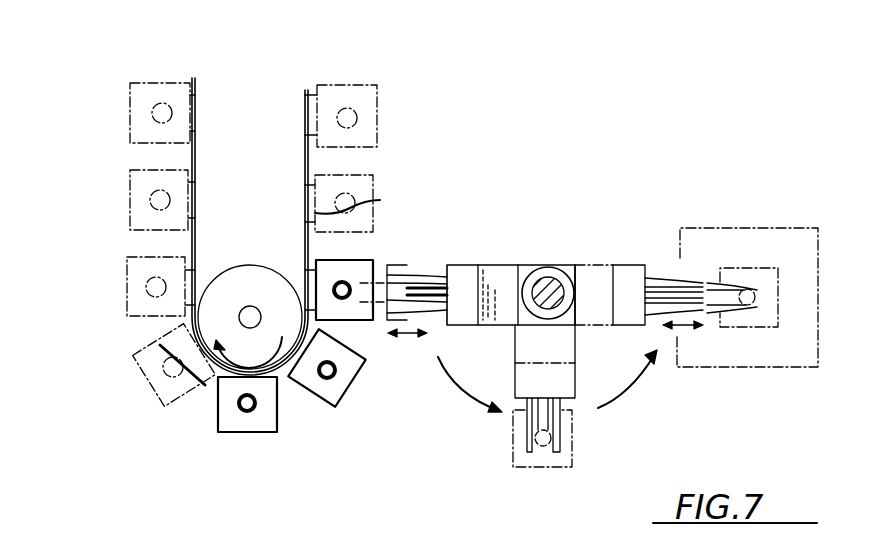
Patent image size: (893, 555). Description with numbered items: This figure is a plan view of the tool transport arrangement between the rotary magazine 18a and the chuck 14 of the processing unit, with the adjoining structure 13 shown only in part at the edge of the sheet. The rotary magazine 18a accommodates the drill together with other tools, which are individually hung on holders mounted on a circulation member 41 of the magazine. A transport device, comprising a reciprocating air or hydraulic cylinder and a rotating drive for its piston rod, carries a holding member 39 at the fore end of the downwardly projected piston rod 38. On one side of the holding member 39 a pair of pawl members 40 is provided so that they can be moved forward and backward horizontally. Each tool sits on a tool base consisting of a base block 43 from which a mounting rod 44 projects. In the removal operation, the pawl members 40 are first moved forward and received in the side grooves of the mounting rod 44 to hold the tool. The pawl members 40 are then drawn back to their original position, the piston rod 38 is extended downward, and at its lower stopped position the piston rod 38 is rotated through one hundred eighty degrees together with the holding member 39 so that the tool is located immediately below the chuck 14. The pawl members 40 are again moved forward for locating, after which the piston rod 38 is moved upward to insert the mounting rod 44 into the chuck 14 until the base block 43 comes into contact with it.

The conveyor 13 is at (672, 8).
The chuck 14 is at (740, 228).
The rotary magazine 18a is at (300, 86).
The piston rod 38 is at (552, 280).
The holding member 39 is at (507, 280).
The pawl members 40 is at (448, 277).
The circulation member 41 is at (200, 232).
The base block 43 is at (128, 268).
The mounting rod 44 is at (245, 410).